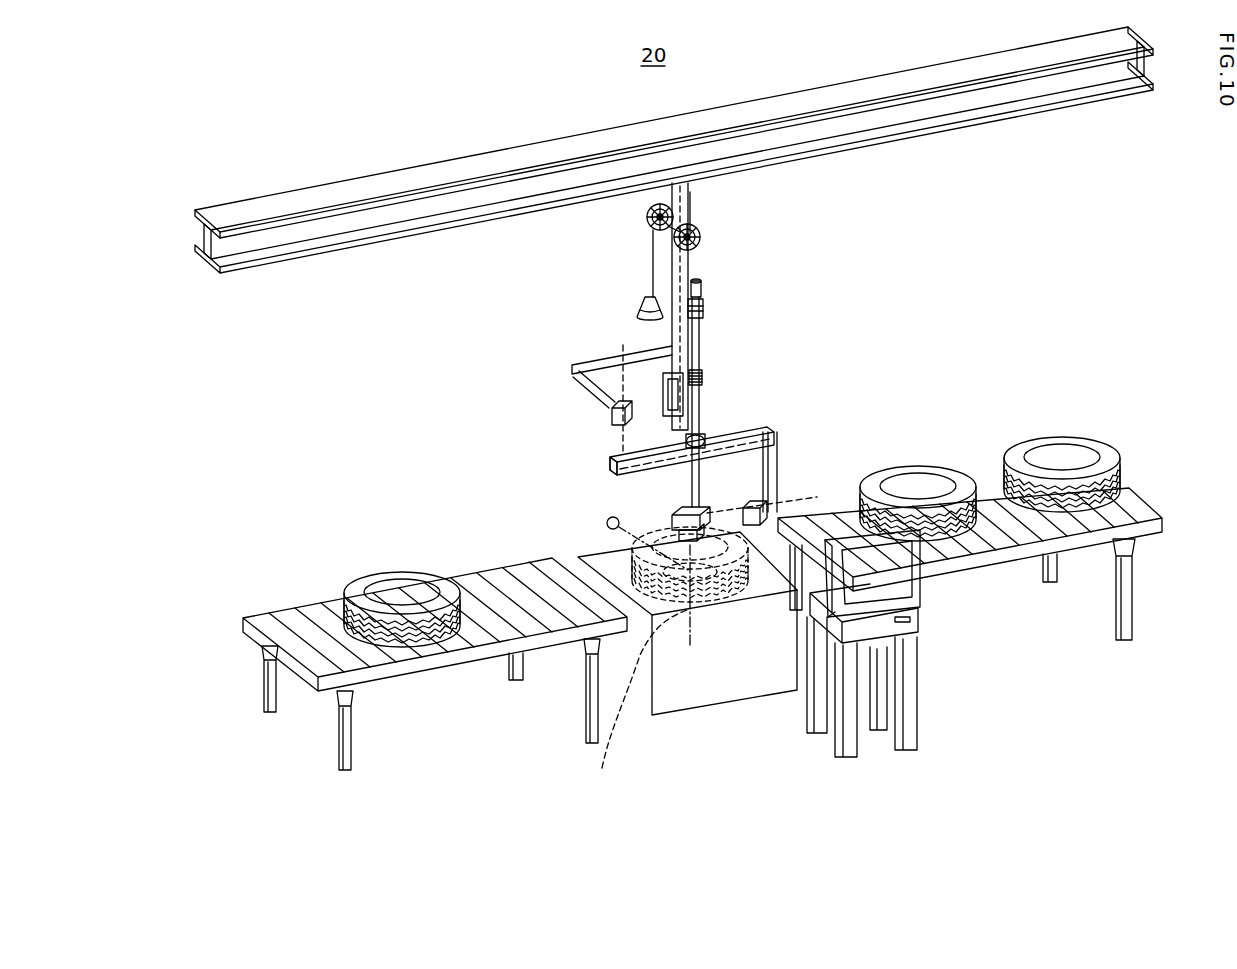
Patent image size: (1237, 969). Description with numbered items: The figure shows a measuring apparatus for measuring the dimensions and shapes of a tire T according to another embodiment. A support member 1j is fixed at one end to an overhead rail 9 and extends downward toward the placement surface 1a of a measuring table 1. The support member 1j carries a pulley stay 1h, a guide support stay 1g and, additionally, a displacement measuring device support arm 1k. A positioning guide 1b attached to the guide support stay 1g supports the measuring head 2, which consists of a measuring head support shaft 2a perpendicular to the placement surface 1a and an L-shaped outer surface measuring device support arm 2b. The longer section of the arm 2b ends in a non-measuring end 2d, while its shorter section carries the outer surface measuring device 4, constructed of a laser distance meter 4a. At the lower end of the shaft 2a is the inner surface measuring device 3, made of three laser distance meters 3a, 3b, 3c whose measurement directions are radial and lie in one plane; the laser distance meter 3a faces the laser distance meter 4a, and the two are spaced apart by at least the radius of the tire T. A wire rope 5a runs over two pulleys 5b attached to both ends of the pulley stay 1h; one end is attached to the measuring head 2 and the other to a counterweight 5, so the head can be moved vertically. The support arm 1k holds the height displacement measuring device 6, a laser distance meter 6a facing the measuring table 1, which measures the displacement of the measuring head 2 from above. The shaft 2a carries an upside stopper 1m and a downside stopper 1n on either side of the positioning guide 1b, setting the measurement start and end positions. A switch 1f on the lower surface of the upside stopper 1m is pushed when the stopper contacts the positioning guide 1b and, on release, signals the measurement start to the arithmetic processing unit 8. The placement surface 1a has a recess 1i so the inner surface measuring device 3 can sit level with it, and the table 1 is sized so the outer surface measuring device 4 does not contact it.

The measuring table 1 is at (722, 703).
The placement surface 1a is at (743, 590).
The positioning guide 1b is at (703, 377).
The switch 1f is at (705, 316).
The guide support stay 1g is at (665, 392).
The pulley stay 1h is at (692, 187).
The recess 1i is at (638, 706).
The support member 1j is at (697, 213).
The displacement measuring device support arm 1k is at (603, 378).
The upside stopper 1m is at (705, 301).
The downside stopper 1n is at (703, 440).
The measuring head 2 is at (771, 423).
The measuring head support shaft 2a is at (640, 474).
The outer surface measuring device support arm 2b is at (612, 414).
The non-measuring end 2d is at (612, 463).
The inner surface measuring device 3 is at (682, 486).
The laser distance meter 3a is at (764, 452).
The laser distance meter 3b is at (670, 516).
The laser distance meter 3c is at (607, 523).
The outer surface measuring device 4 is at (809, 483).
The laser distance meter 4a is at (752, 506).
The counterweight 5 is at (638, 310).
The wire rope 5a is at (652, 263).
The pulley 5b is at (648, 216).
The height displacement measuring device 6 is at (542, 356).
The laser distance meter 6a is at (573, 367).
The arithmetic processing unit 8 is at (930, 620).
The rail 9 is at (362, 191).
The tire T is at (353, 597).